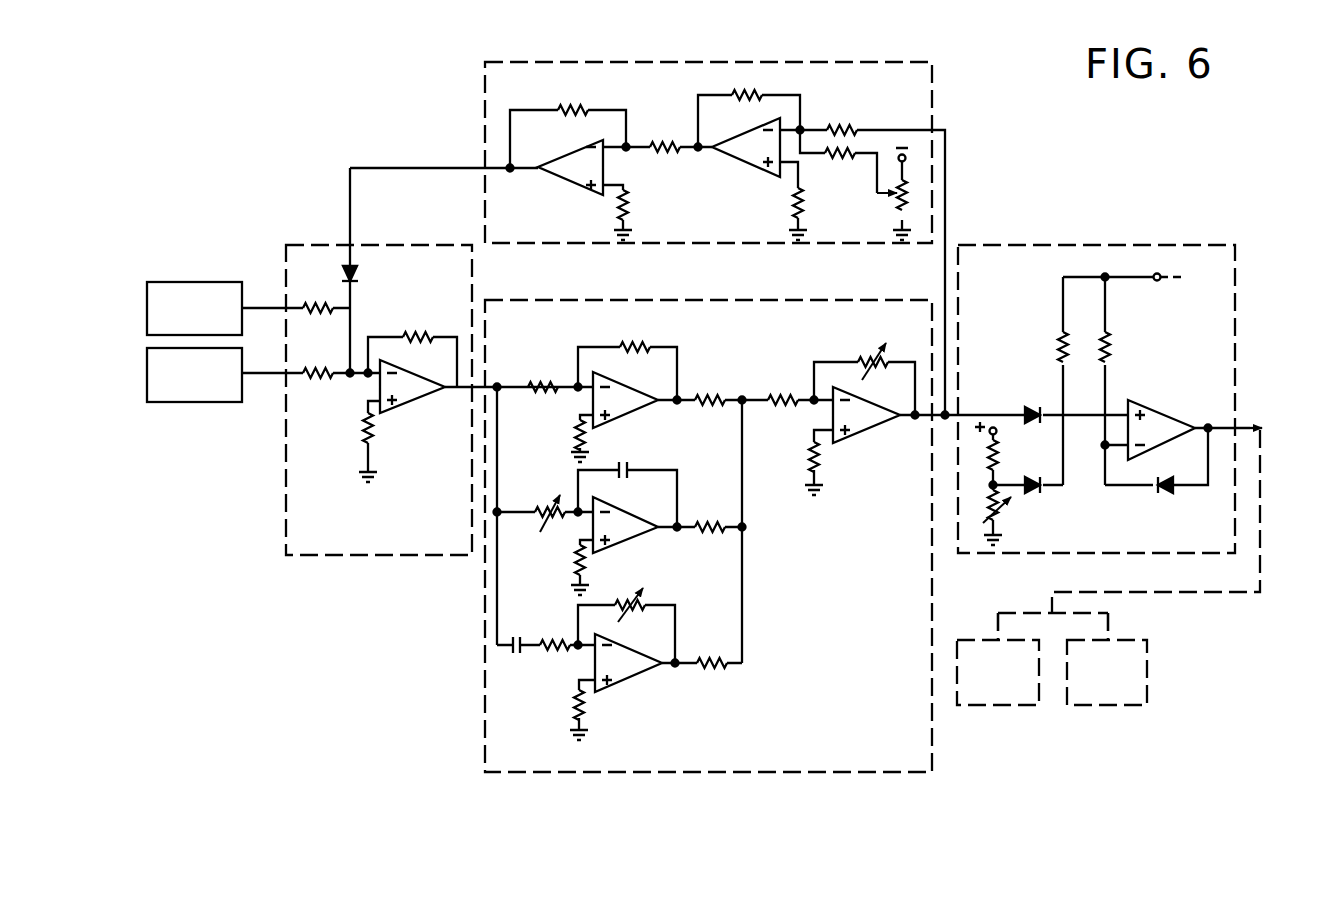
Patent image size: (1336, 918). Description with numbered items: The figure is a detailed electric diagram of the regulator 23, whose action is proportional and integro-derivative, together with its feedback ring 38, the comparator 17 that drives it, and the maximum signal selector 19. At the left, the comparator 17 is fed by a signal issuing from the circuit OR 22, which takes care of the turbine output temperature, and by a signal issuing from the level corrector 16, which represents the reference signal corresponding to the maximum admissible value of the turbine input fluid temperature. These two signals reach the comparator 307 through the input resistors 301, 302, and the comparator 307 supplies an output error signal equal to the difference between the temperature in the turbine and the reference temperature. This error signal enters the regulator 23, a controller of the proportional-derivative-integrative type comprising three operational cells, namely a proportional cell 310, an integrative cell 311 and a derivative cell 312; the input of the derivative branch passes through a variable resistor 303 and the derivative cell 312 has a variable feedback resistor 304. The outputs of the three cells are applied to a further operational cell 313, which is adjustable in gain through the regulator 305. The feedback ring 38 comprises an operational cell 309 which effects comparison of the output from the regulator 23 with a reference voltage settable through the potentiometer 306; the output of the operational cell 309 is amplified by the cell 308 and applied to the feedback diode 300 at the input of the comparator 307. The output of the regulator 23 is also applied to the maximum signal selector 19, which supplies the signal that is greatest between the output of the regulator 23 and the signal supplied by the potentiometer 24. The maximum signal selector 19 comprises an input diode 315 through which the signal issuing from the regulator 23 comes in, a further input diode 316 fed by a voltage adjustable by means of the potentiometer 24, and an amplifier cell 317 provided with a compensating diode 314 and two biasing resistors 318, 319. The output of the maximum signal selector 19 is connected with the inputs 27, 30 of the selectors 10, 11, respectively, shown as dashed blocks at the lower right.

The circuit OR 22 is at (178, 292).
The level corrector 16 is at (177, 390).
The comparator 17 is at (394, 532).
The input resistor 301 is at (315, 300).
The input resistor 302 is at (313, 366).
The feedback diode 300 is at (392, 262).
The comparator 307 is at (419, 408).
The feedback ring 38 is at (705, 76).
The cell 308 is at (556, 183).
The operational cell 309 is at (729, 164).
The potentiometer 306 is at (889, 203).
The regulator 23 is at (855, 737).
The proportional cell 310 is at (634, 424).
The variable resistor 303 is at (534, 505).
The integrative cell 311 is at (637, 548).
The differentiating operational amplifier 312 is at (642, 686).
The variable resistor 304 is at (650, 591).
The further operational cell 313 is at (870, 447).
The regulator 305 is at (863, 352).
The maximum signal selector 19 is at (1096, 252).
The input diode 315 is at (1032, 402).
The further input diode 316 is at (1050, 492).
The compensating diode 314 is at (1182, 512).
The amplifier cell 317 is at (1168, 405).
The biasing resistor 318 is at (1050, 348).
The biasing resistor 319 is at (1115, 340).
The potentiometer 24 is at (1012, 521).
The input 30 is at (997, 633).
The input 27 is at (1110, 627).
The selector 11 is at (1018, 692).
The selector 10 is at (1122, 692).